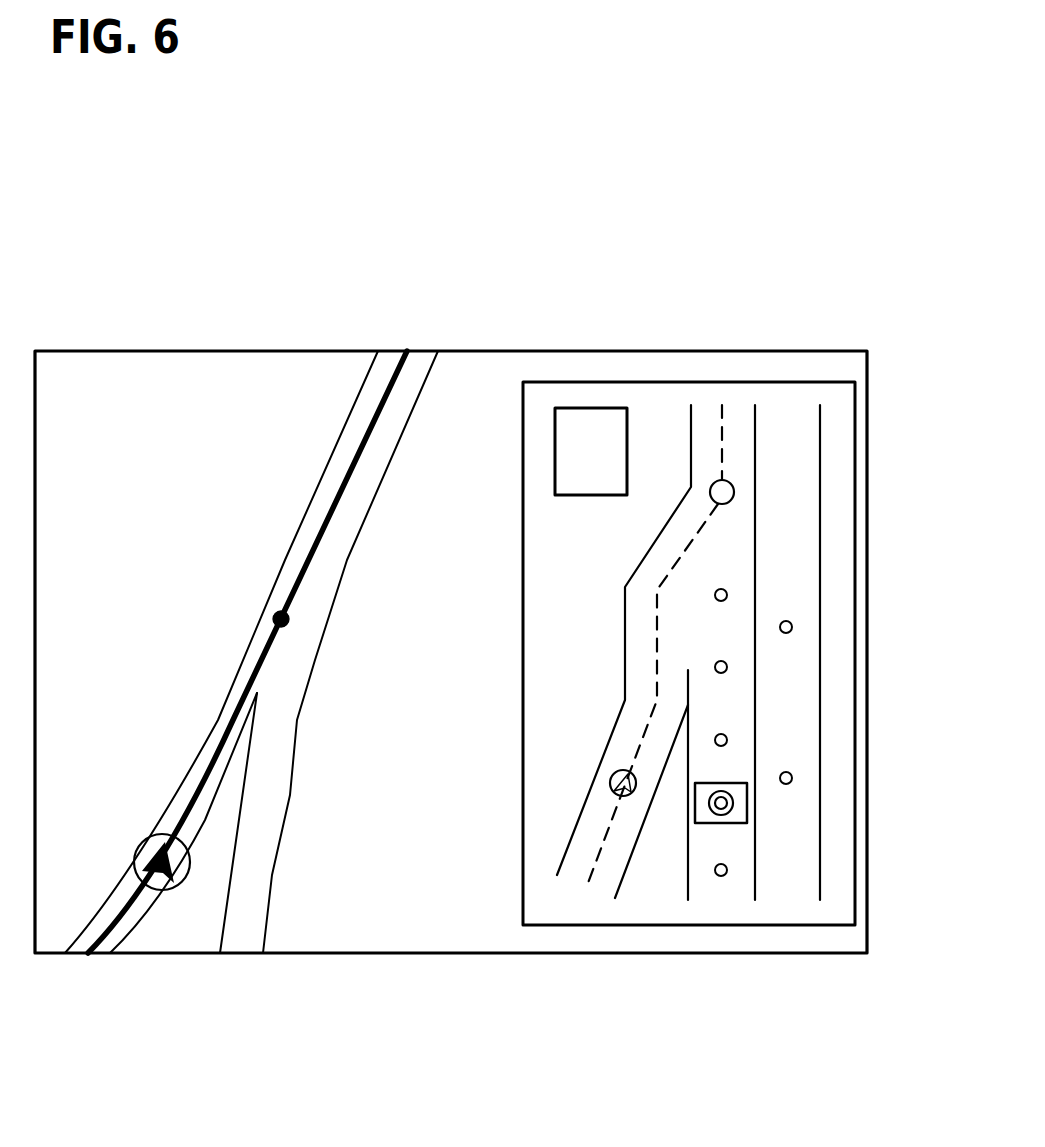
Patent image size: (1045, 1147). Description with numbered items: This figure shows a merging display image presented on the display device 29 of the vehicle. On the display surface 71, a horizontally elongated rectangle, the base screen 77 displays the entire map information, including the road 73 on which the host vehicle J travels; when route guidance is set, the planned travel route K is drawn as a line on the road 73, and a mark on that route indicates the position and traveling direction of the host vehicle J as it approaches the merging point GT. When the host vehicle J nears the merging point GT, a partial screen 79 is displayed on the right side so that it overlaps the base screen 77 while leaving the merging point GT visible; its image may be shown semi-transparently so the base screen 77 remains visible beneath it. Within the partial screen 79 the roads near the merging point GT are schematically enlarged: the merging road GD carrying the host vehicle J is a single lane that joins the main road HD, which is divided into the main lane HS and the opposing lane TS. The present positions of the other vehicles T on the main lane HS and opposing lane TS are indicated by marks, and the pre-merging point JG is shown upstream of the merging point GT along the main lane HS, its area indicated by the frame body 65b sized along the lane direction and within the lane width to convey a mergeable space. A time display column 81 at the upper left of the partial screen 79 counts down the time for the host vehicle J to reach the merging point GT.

The display device 29 is at (597, 270).
The display surface 71 is at (103, 378).
The base screen 77 is at (223, 378).
The road 73 is at (263, 795).
The partial screen 79 is at (830, 452).
The time display column 81 is at (570, 417).
The frame body 65b is at (733, 783).
The planned travel route K is at (334, 506).
The merging point GT is at (290, 618).
The merging road GD is at (202, 772).
The host vehicle J is at (141, 843).
The main road HD is at (257, 875).
The main lane HS is at (717, 885).
The opposing lane TS is at (783, 890).
The other vehicles T is at (787, 621).
The pre-merging point JG is at (740, 812).